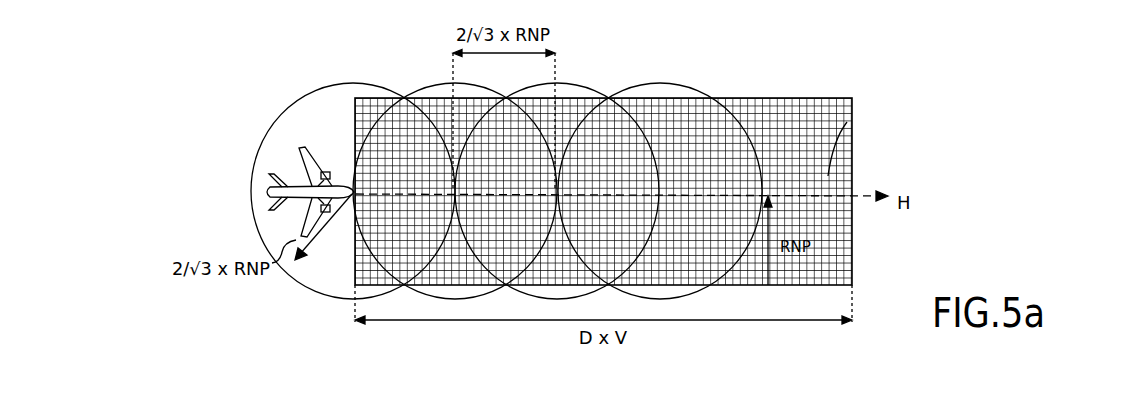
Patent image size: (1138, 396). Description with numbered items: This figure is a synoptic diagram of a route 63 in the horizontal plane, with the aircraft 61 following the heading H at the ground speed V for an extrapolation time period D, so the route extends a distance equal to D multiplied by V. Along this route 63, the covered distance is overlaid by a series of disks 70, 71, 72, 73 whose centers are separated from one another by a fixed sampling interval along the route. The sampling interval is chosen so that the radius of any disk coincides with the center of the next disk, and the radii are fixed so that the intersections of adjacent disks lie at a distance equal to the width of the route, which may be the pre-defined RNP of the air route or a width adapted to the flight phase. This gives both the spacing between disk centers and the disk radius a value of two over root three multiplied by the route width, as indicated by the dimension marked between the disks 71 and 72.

The aircraft 61 is at (302, 157).
The route 63 is at (852, 152).
The disk 70 is at (323, 73).
The disk 71 is at (436, 75).
The disk 72 is at (587, 82).
The disk 73 is at (695, 83).